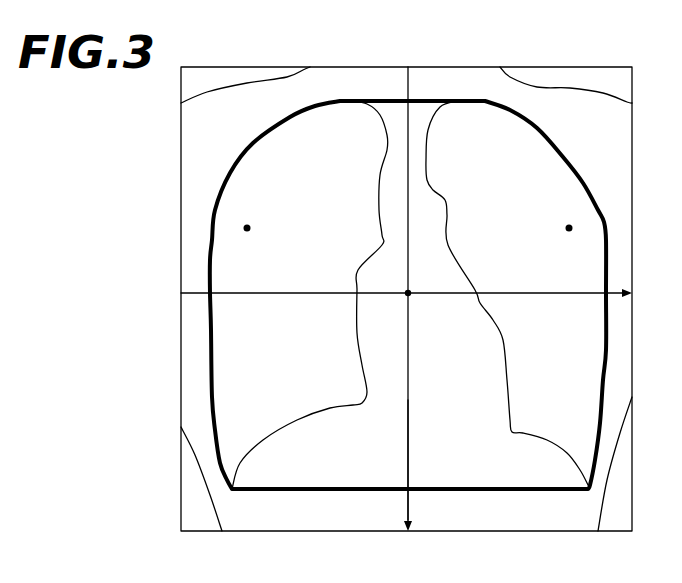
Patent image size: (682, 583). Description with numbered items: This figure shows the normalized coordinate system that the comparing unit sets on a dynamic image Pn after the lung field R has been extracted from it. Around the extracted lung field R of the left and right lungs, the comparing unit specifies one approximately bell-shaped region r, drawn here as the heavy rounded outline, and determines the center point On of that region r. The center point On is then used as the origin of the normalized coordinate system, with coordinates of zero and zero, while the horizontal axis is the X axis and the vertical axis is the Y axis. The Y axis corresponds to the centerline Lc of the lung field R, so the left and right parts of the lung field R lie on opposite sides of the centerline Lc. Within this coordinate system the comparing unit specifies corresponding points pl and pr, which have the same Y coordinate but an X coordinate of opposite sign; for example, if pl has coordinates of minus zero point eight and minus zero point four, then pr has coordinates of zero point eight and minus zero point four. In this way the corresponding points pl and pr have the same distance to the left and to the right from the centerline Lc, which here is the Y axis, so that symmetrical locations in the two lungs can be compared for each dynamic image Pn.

The dynamic image Pn is at (406, 317).
The lung field R is at (521, 157).
The approximately bell-shaped region r is at (235, 342).
The centerline Lc is at (409, 145).
The center point On is at (394, 309).
The corresponding point pr is at (252, 243).
The corresponding point pl is at (569, 243).
The X axis X is at (418, 289).
The Y axis Y is at (408, 484).